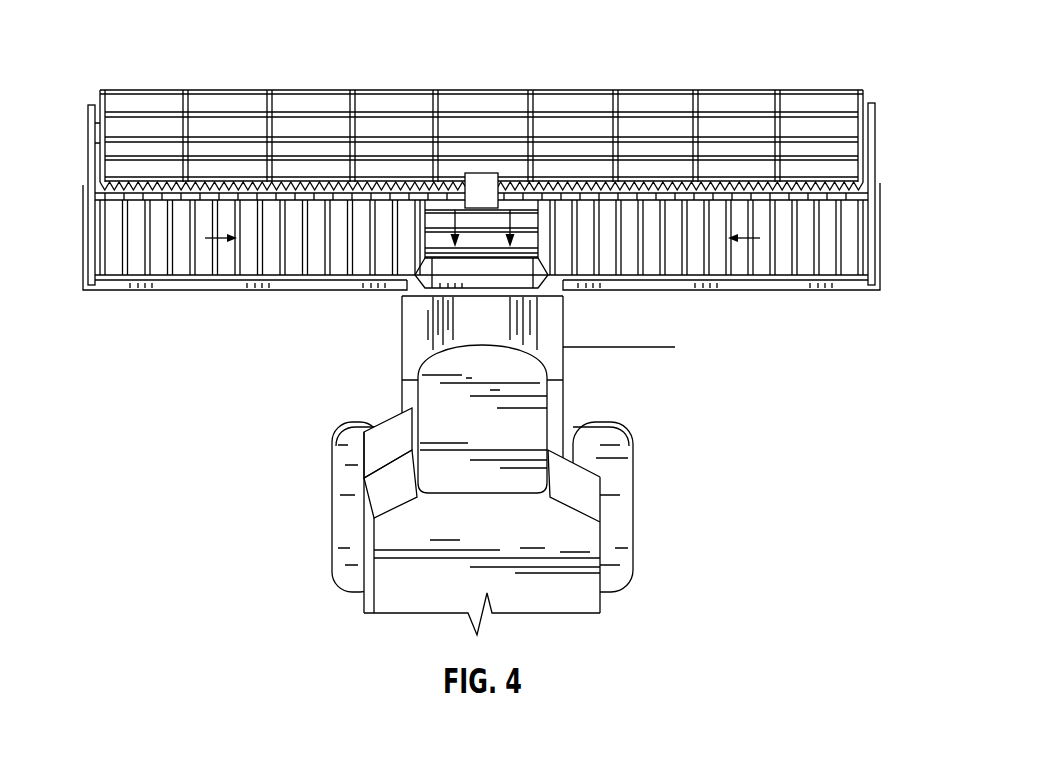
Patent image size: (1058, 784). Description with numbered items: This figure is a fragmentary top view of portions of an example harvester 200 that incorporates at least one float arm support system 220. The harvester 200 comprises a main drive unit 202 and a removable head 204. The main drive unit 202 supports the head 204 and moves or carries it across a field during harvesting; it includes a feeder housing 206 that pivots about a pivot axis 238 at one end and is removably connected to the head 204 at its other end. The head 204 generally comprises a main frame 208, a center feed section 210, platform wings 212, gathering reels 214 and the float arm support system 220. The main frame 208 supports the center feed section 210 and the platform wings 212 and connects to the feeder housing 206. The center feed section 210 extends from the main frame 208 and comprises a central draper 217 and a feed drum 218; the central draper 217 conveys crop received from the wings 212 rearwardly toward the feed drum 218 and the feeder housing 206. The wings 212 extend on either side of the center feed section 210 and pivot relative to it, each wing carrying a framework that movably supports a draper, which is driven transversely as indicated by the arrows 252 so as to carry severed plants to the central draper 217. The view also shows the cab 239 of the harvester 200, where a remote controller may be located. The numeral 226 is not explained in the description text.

The harvester 200 is at (138, 46).
The main drive unit 202 is at (324, 567).
The head 204 is at (856, 78).
The feeder housing 206 is at (400, 337).
The main frame 208 is at (813, 290).
The center feed section 210 is at (513, 205).
The platform wings 212 is at (852, 233).
The gathering reels 214 is at (153, 93).
The central draper 217 is at (443, 242).
The feed drum 218 is at (494, 278).
The float arm support system 220 is at (848, 182).
The shelf 226 is at (740, 182).
The pivot axis 238 is at (618, 347).
The cab 239 is at (602, 605).
The arrows 252 is at (227, 240).